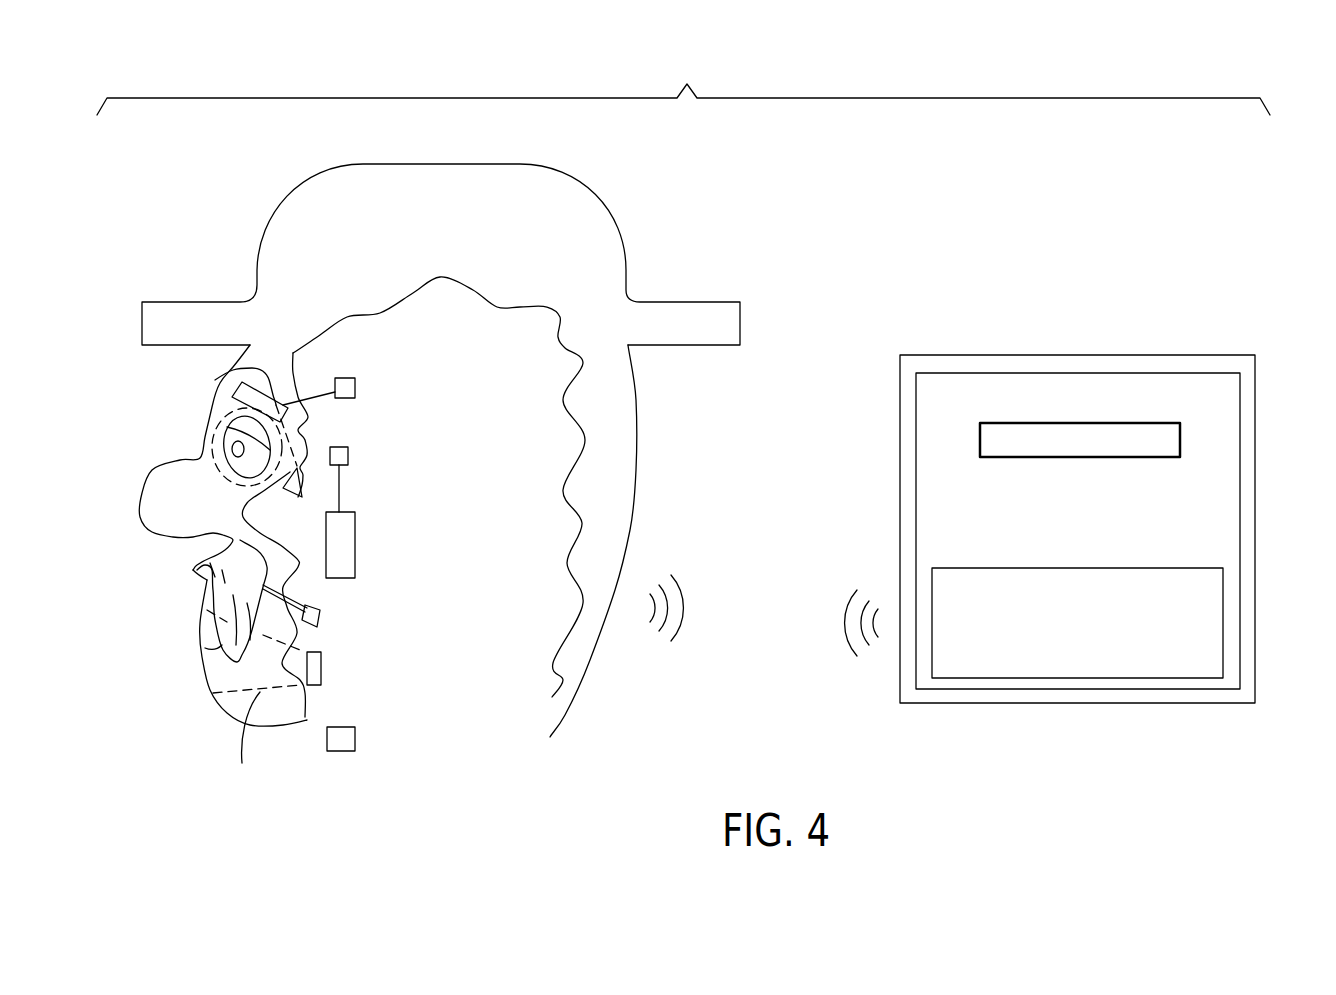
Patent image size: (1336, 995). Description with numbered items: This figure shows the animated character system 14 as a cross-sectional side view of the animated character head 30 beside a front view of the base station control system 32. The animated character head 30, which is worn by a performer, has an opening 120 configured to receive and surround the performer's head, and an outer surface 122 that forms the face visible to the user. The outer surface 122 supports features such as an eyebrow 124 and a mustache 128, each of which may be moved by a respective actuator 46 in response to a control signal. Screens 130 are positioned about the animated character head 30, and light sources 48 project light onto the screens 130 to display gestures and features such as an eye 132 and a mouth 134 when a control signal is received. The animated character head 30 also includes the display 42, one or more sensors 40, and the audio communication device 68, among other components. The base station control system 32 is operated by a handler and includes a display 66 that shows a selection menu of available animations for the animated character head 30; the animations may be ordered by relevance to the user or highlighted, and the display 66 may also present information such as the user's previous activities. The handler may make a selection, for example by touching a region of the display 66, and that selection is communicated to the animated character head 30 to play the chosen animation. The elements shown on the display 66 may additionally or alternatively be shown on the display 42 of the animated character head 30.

The animated character system 14 is at (683, 82).
The animated character head 30 is at (678, 182).
The base station control system 32 is at (1110, 511).
The sensors 40 is at (348, 458).
The display 42 is at (355, 537).
The actuators 46 is at (345, 378).
The light sources 48 is at (303, 492).
The display 66 is at (1242, 492).
The audio communication device 68 is at (338, 751).
The opening 120 is at (497, 549).
The outer surface 122 is at (183, 408).
The eyebrow 124 is at (233, 368).
The mustache 128 is at (200, 568).
The screens 130 is at (215, 440).
The eye 132 is at (233, 478).
The mouth 134 is at (215, 691).